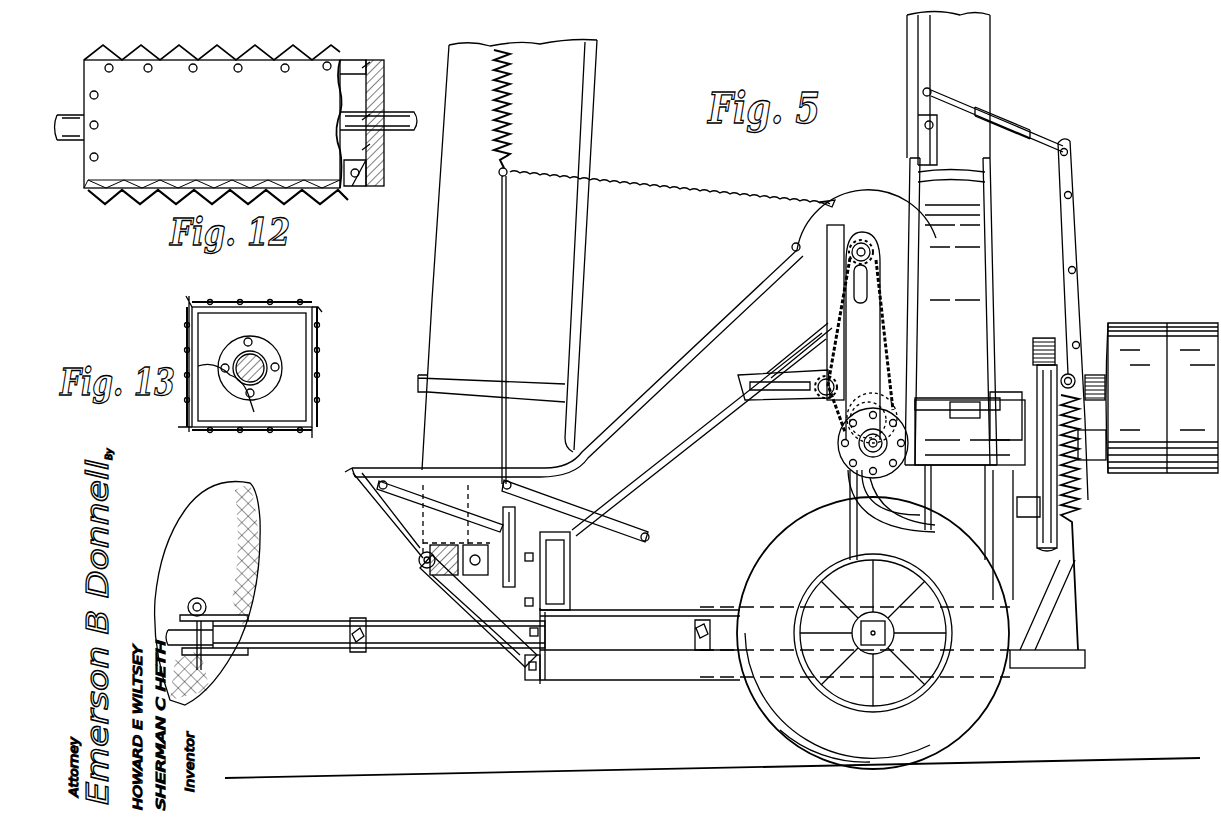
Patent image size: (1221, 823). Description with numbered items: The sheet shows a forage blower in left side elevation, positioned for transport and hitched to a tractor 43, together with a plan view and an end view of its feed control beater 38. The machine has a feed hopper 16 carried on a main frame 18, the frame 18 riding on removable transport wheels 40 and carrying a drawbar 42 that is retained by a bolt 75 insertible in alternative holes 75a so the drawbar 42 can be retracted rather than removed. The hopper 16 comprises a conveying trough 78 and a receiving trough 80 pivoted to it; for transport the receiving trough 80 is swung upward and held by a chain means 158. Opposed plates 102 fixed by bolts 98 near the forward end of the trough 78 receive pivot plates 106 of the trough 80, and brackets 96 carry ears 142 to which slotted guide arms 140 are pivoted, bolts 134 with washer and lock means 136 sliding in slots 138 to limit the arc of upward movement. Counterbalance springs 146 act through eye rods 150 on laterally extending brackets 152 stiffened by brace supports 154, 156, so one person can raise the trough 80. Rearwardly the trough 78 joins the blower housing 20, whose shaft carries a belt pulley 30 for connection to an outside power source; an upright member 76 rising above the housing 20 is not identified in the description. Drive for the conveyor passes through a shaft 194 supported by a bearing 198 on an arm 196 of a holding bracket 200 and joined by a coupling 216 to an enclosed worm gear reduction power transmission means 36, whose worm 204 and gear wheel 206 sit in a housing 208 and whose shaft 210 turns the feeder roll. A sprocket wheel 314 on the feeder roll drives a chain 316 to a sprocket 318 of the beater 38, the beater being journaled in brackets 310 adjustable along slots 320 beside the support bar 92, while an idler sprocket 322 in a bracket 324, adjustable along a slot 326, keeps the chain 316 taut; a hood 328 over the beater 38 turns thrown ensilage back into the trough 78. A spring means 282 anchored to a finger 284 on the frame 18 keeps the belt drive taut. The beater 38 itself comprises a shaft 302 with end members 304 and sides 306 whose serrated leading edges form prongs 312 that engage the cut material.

In FIG. 12, the feed control beater 38 is at (140, 210).
In FIG. 13, the feed control beater 38 is at (180, 322).
In FIG. 12, the points or prongs 312 is at (250, 52).
In FIG. 13, the points or prongs 312 is at (200, 306).
In FIG. 12, the sides 306 is at (352, 62).
In FIG. 13, the sides 306 is at (314, 349).
In FIG. 12, the end members 304 is at (380, 84).
In FIG. 13, the end members 304 is at (254, 414).
In FIG. 5, the end members 304 is at (860, 248).
In FIG. 12, the shaft 302 is at (395, 116).
In FIG. 13, the shaft 302 is at (250, 372).
In FIG. 5, the upright post 76 is at (988, 38).
In FIG. 5, the receiving trough 80 is at (600, 155).
In FIG. 5, the conveying trough 78 is at (683, 285).
In FIG. 5, the springs 146 is at (510, 152).
In FIG. 5, the chain means 158 is at (700, 190).
In FIG. 5, the eye rods 150 is at (500, 322).
In FIG. 5, the feed hopper 16 is at (596, 408).
In FIG. 5, the main frame 18 is at (655, 700).
In FIG. 5, the brackets 96 is at (542, 640).
In FIG. 5, the drawbar 42 is at (320, 650).
In FIG. 5, the bolt 75 is at (360, 652).
In FIG. 5, the tractor 43 is at (245, 568).
In FIG. 5, the pivot plates 106 is at (418, 555).
In FIG. 5, the bolts 134 is at (418, 556).
In FIG. 5, the washer and lock means 136 is at (420, 562).
In FIG. 5, the slots 138 is at (440, 585).
In FIG. 5, the brace support 154 is at (434, 500).
In FIG. 5, the brace support 156 is at (598, 510).
In FIG. 5, the laterally extending brackets 152 is at (516, 516).
In FIG. 5, the plates 102 is at (572, 578).
In FIG. 5, the bolts 98 is at (534, 601).
In FIG. 5, the holes 75a is at (530, 636).
In FIG. 5, the slotted guide arms 140 is at (522, 665).
In FIG. 5, the ears 142 is at (532, 684).
In FIG. 5, the support bar 92 is at (840, 481).
In FIG. 5, the transport wheels 40 is at (978, 726).
In FIG. 5, the finger 284 is at (1082, 668).
In FIG. 5, the blower housing 20 is at (951, 311).
In FIG. 5, the hood 328 is at (830, 190).
In FIG. 5, the brackets 310 is at (855, 220).
In FIG. 5, the sprocket 318 is at (872, 248).
In FIG. 5, the slots 320 is at (868, 280).
In FIG. 5, the chain 316 is at (836, 320).
In FIG. 5, the idler sprocket 322 is at (822, 398).
In FIG. 5, the worm gear reduction power transmission means 36 is at (885, 400).
In FIG. 5, the worm 204 is at (885, 405).
In FIG. 5, the gear wheel 206 is at (897, 412).
In FIG. 5, the holding bracket 200 is at (962, 470).
In FIG. 5, the housing 208 is at (915, 500).
In FIG. 5, the shaft 210 is at (925, 516).
In FIG. 5, the shaft 194 is at (978, 412).
In FIG. 5, the sprocket wheel 314 is at (925, 400).
In FIG. 5, the coupling 216 is at (955, 418).
In FIG. 5, the bearing 198 is at (1005, 395).
In FIG. 5, the arm 196 is at (1032, 350).
In FIG. 5, the bracket 324 is at (798, 360).
In FIG. 5, the slot 326 is at (754, 400).
In FIG. 5, the spring means 282 is at (1082, 512).
In FIG. 5, the belt pulley 30 is at (1130, 472).